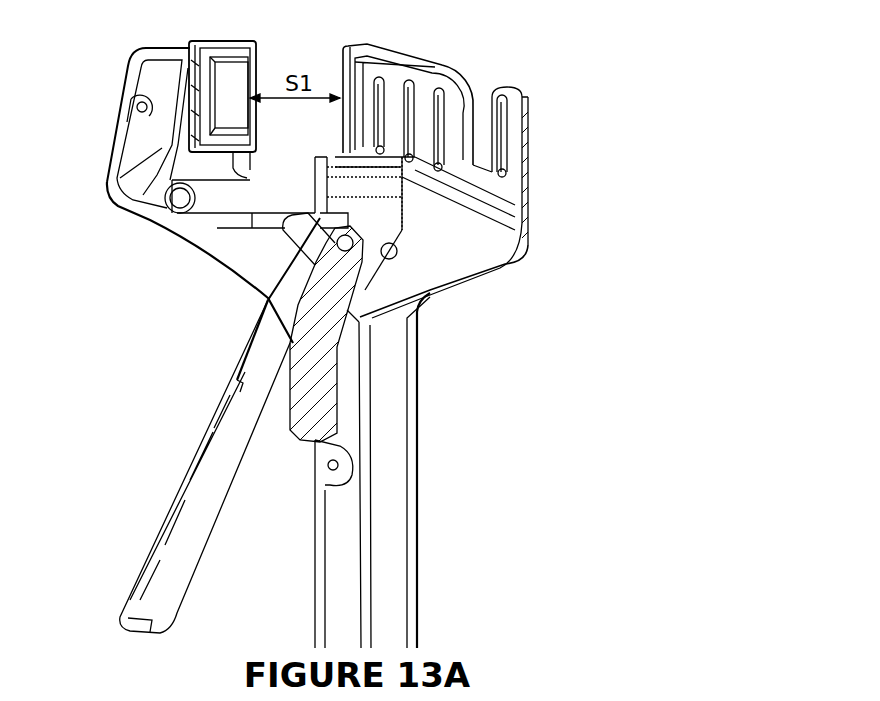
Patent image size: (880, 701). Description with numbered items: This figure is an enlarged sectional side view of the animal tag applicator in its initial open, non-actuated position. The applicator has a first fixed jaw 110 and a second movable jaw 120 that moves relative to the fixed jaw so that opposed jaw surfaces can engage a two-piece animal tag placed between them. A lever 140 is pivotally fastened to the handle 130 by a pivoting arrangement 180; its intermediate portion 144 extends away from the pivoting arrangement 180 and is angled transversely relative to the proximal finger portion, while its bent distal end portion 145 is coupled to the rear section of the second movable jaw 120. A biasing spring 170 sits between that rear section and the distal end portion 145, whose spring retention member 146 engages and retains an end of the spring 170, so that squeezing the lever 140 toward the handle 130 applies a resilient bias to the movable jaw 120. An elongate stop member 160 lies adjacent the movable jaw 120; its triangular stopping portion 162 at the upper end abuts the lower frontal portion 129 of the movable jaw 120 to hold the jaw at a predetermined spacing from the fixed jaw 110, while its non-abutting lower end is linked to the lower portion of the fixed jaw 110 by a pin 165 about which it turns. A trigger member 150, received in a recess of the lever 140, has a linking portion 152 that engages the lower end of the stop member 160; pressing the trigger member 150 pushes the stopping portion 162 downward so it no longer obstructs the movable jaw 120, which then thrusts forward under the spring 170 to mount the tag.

The first fixed jaw 110 is at (197, 102).
The second movable jaw 120 is at (380, 63).
The lower frontal portion 129 is at (318, 168).
The handle 130 is at (392, 571).
The lever 140 is at (203, 447).
The intermediate portion 144 is at (455, 232).
The distal end portion 145 is at (513, 221).
The spring retention member 146 is at (510, 174).
The trigger member 150 is at (302, 413).
The linking portion 152 is at (300, 228).
The stop member 160 is at (240, 183).
The triangular stopping portion 162 is at (323, 170).
The pin 165 is at (180, 182).
The spring 170 is at (495, 147).
The pivoting arrangement 180 is at (394, 257).